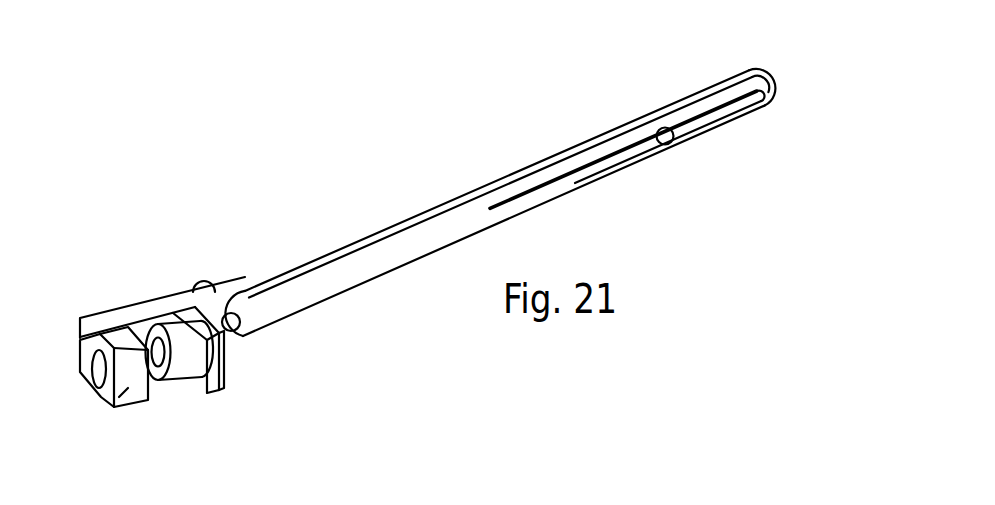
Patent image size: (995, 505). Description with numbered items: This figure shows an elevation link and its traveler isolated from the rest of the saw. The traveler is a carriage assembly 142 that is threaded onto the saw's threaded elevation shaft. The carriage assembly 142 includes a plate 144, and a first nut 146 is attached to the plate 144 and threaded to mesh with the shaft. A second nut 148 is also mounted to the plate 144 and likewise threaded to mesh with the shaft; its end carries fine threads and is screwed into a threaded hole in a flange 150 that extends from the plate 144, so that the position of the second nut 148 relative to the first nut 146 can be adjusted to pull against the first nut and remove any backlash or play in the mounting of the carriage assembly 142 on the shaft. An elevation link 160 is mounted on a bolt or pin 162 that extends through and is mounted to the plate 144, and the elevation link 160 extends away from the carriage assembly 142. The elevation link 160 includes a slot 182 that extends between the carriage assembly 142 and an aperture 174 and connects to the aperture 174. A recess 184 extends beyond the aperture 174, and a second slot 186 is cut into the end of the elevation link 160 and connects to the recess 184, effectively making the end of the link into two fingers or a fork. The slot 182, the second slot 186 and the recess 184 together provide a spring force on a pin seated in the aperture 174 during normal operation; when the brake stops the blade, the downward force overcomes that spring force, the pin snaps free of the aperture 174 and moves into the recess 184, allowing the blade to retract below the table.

The carriage assembly 142 is at (173, 335).
The plate 144 is at (93, 315).
The first nut 146 is at (132, 383).
The second nut 148 is at (185, 360).
The flange 150 is at (213, 373).
The elevation link 160 is at (542, 191).
The bolt or pin 162 is at (245, 283).
The aperture 174 is at (672, 143).
The slot 182 is at (550, 183).
The recess 184 is at (737, 85).
The second slot 186 is at (773, 92).